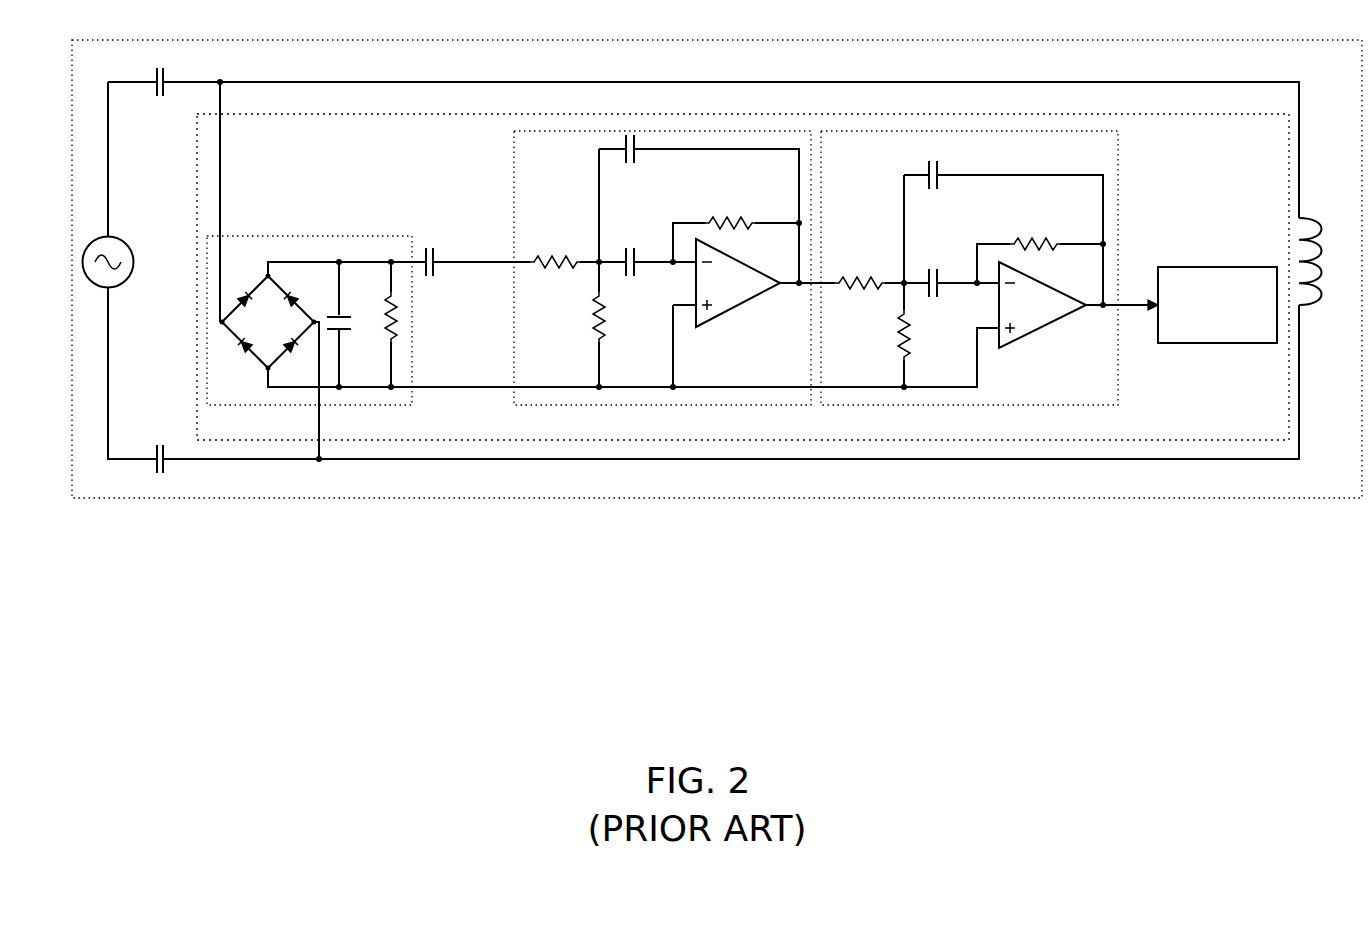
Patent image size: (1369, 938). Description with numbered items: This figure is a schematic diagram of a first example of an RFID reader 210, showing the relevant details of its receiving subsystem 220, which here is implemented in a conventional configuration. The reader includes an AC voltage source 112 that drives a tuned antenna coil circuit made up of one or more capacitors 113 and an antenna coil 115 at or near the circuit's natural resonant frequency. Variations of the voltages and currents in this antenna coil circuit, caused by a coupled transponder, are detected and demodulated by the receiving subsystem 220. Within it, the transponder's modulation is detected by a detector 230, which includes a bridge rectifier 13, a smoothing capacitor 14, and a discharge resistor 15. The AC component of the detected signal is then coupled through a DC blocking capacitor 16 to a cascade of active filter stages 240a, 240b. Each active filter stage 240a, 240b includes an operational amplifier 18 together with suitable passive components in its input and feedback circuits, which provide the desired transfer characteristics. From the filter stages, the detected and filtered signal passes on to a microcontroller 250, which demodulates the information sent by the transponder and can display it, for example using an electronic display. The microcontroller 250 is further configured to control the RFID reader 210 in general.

The AC voltage source 112 is at (97, 233).
The capacitors 113 is at (162, 413).
The bridge rectifier 13 is at (268, 322).
The smoothing capacitor 14 is at (345, 312).
The discharge resistor 15 is at (379, 320).
The DC blocking capacitor 16 is at (432, 252).
The operational amplifier 18 is at (891, 293).
The RFID reader 210 is at (368, 500).
The receiving subsystem 220 is at (399, 159).
The detector 230 is at (311, 236).
The active filter stage 240a is at (735, 408).
The active filter stage 240b is at (1055, 408).
The microcontroller 250 is at (1207, 267).
The antenna coil 115 is at (1333, 305).